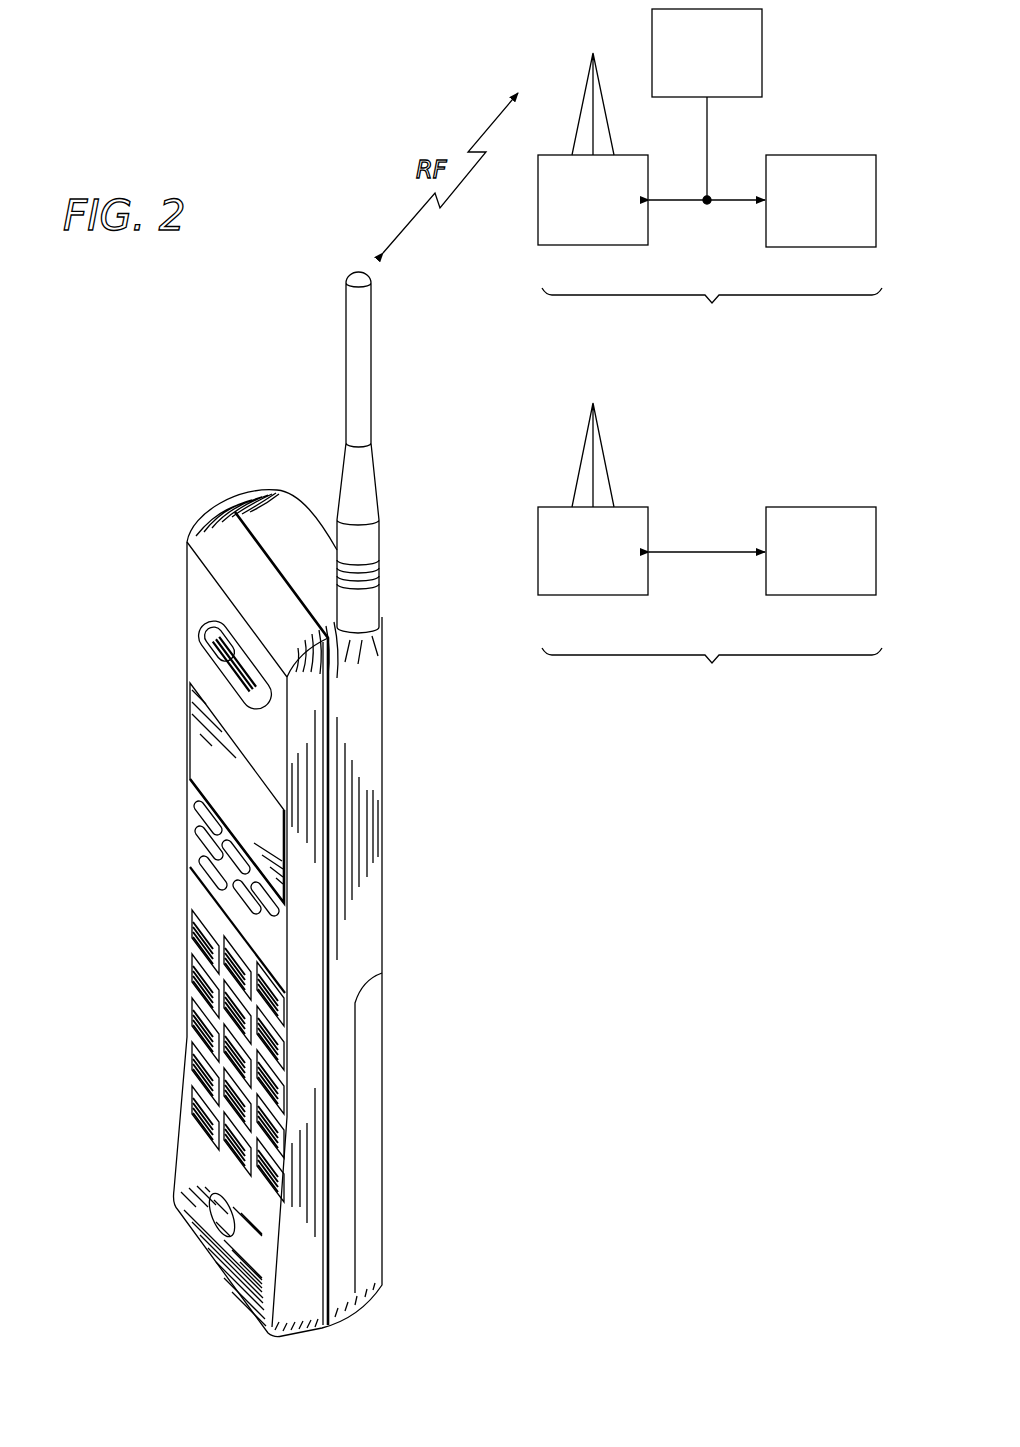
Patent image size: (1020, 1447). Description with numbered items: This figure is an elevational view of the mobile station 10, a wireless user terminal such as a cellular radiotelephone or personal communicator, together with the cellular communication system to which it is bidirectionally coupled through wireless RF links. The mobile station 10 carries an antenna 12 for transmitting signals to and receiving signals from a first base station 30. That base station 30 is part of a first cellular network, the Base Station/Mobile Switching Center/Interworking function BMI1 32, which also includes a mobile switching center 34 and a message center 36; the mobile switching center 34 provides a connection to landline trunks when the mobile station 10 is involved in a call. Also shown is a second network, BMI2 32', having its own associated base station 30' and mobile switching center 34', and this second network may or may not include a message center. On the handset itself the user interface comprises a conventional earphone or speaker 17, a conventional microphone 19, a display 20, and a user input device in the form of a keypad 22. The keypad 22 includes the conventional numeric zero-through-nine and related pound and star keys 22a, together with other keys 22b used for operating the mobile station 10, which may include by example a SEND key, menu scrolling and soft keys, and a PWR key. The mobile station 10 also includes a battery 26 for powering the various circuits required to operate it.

The mobile station 10 is at (115, 531).
The antenna 12 is at (358, 388).
The speaker 17 is at (224, 644).
The microphone 19 is at (217, 1219).
The display 20 is at (212, 769).
The keypad 22 is at (287, 1062).
The numeric and related keys 22a is at (190, 1040).
The other keys 22b is at (203, 869).
The battery 26 is at (366, 1168).
The base station 30 is at (593, 172).
The base station 30' is at (593, 523).
The Base Station/Mobile Switching Center/Interworking function (BMI1) 32 is at (712, 336).
The second BMI2 32' is at (712, 695).
The mobile switching center 34 is at (829, 180).
The mobile switching center 34' is at (821, 575).
The Message Center 36 is at (763, 52).